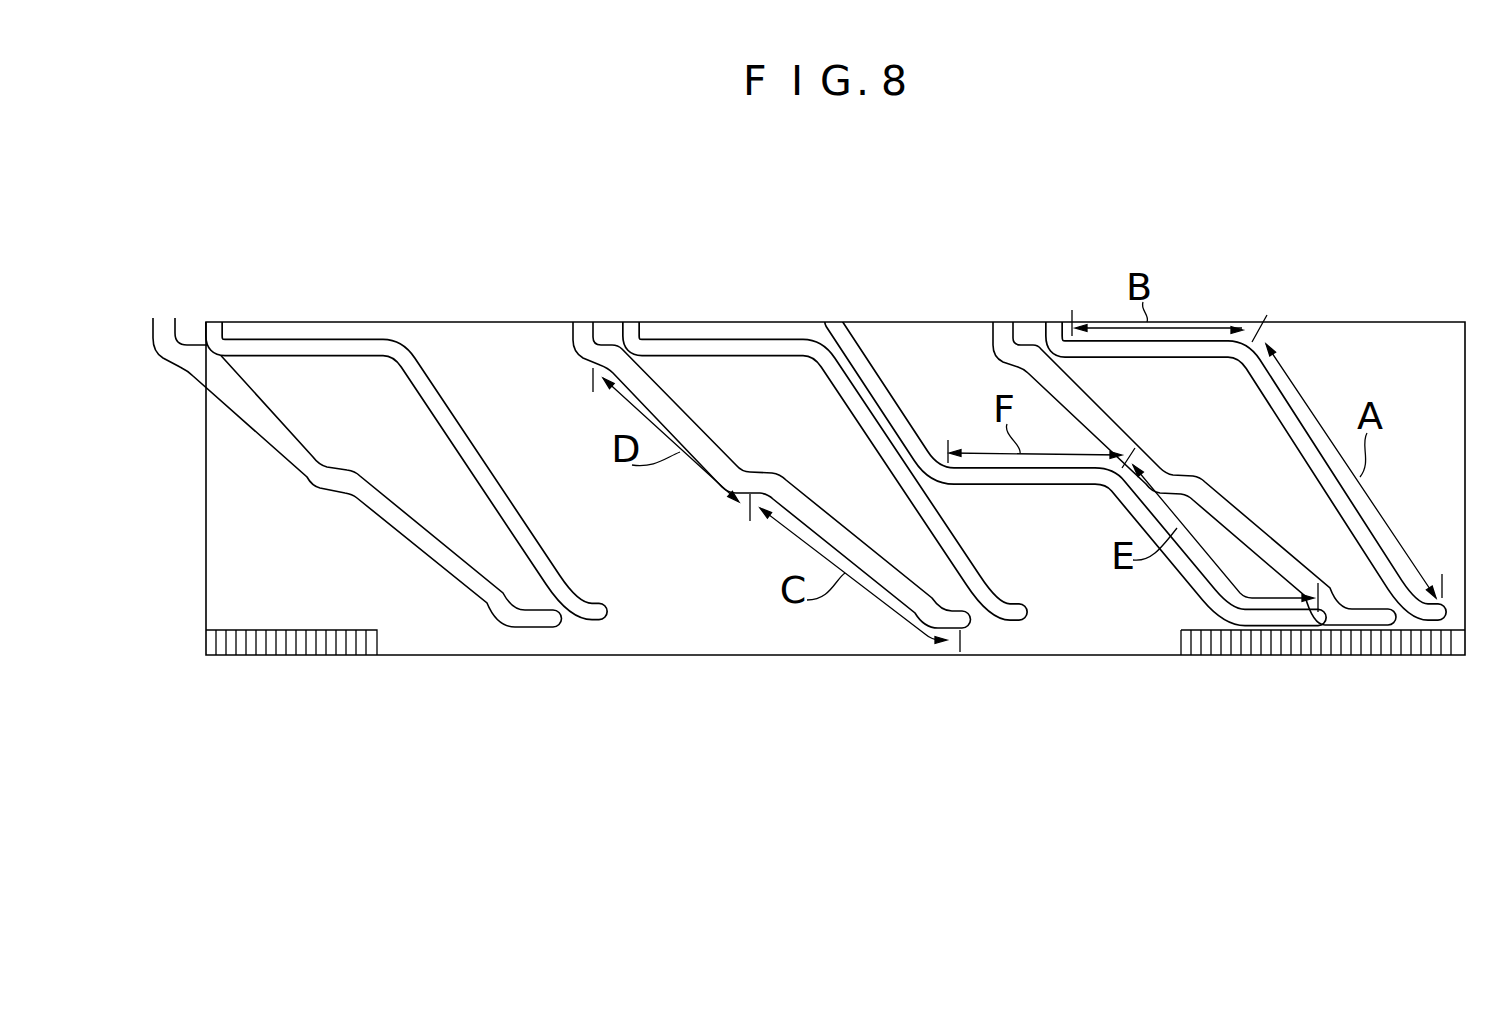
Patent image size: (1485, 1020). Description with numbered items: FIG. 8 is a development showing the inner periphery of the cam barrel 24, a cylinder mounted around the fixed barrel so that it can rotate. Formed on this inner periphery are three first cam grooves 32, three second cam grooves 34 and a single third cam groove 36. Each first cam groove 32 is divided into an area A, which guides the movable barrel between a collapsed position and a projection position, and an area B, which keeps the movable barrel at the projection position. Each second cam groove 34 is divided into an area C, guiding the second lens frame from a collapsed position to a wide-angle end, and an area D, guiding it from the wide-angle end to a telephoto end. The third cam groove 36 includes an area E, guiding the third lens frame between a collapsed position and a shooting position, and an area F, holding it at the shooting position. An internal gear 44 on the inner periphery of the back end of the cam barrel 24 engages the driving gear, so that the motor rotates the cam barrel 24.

The cam barrel 24 is at (500, 366).
The first cam groove 32 is at (360, 346).
The second cam groove 34 is at (249, 392).
The third cam groove 36 is at (874, 380).
The internal gear 44 is at (1275, 645).